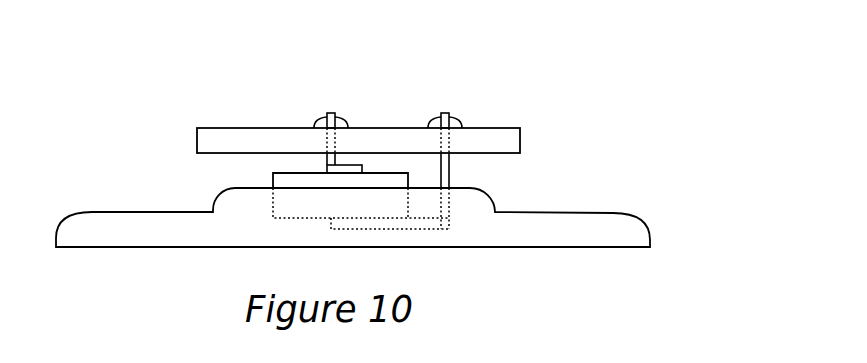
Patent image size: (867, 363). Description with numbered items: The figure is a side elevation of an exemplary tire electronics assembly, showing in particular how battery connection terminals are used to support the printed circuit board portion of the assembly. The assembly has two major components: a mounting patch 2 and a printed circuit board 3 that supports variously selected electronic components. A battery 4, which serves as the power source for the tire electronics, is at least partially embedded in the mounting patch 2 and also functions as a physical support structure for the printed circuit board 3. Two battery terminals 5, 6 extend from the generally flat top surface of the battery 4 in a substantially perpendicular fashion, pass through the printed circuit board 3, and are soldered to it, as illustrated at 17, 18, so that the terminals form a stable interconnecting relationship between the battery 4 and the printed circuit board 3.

The mounting patch 2 is at (644, 228).
The printed circuit board 3 is at (520, 127).
The battery 4 is at (273, 183).
The battery terminal 5 is at (327, 114).
The battery terminal 6 is at (449, 113).
The solder 17 is at (340, 126).
The solder 18 is at (436, 127).